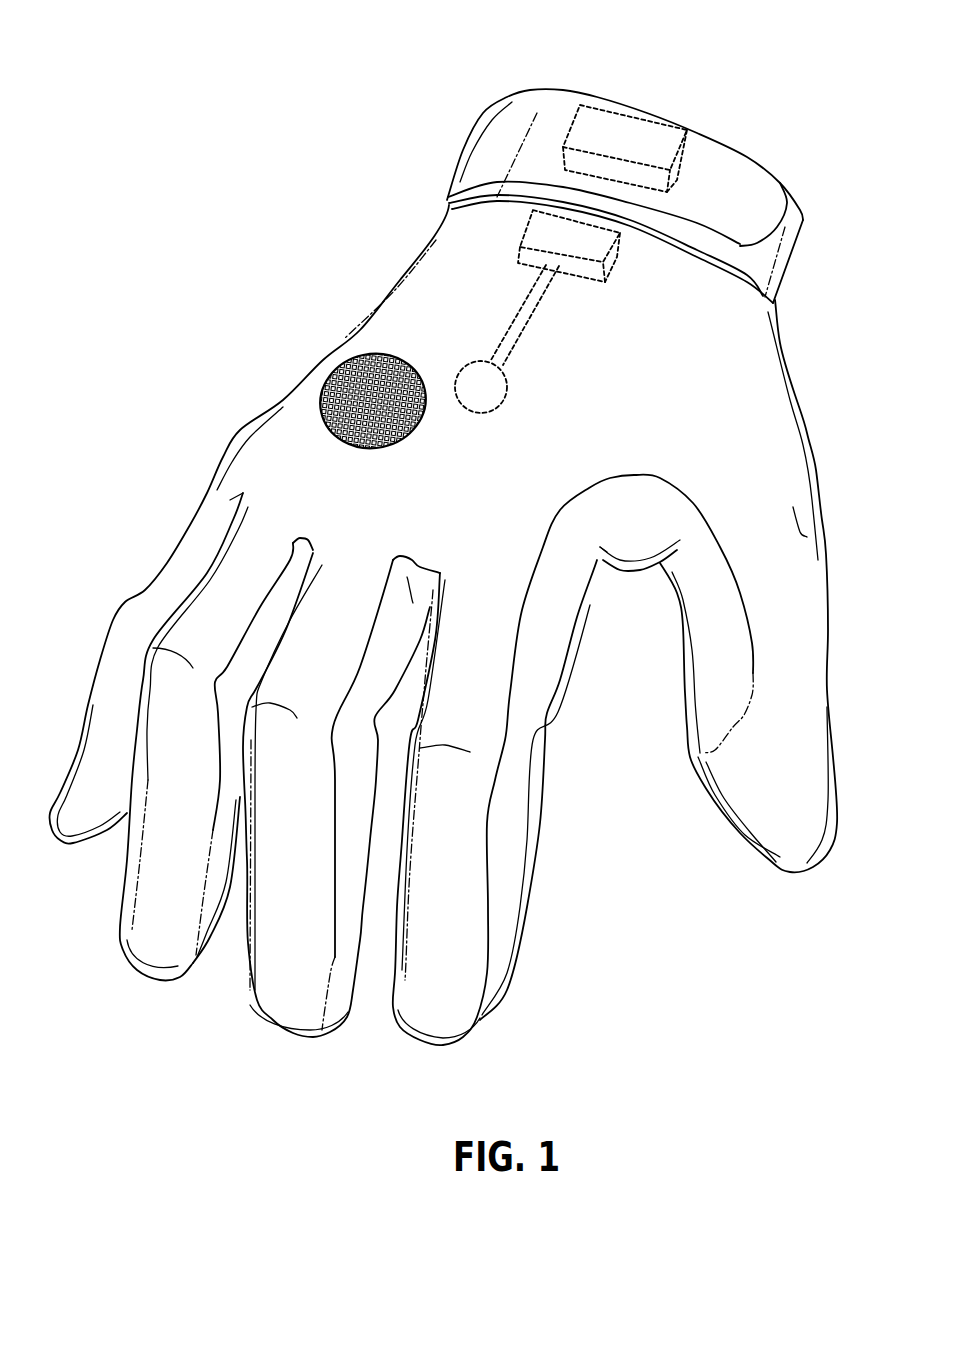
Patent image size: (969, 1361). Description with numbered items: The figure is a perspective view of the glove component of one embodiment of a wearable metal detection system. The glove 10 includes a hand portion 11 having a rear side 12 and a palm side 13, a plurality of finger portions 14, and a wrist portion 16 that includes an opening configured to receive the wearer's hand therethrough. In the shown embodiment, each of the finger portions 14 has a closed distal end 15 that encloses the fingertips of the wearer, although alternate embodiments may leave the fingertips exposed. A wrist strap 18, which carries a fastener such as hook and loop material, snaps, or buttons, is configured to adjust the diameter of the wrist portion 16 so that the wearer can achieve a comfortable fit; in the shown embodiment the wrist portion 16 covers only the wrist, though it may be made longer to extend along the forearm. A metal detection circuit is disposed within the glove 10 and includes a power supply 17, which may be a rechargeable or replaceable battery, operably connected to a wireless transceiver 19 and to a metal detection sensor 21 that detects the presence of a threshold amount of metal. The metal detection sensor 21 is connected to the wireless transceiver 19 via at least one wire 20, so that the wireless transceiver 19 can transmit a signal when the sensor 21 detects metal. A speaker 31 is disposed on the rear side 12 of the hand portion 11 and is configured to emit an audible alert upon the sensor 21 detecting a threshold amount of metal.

The glove 10 is at (228, 211).
The hand portion 11 is at (757, 333).
The rear side 12 is at (405, 293).
The palm side 13 is at (626, 578).
The finger portions 14 is at (531, 847).
The closed distal end 15 is at (440, 1045).
The wrist portion 16 is at (788, 217).
The power supply 17 is at (623, 127).
The wrist strap 18 is at (740, 170).
The wireless transceiver 19 is at (617, 279).
The wire 20 is at (523, 327).
The metal detection sensor 21 is at (507, 407).
The speaker 31 is at (330, 373).